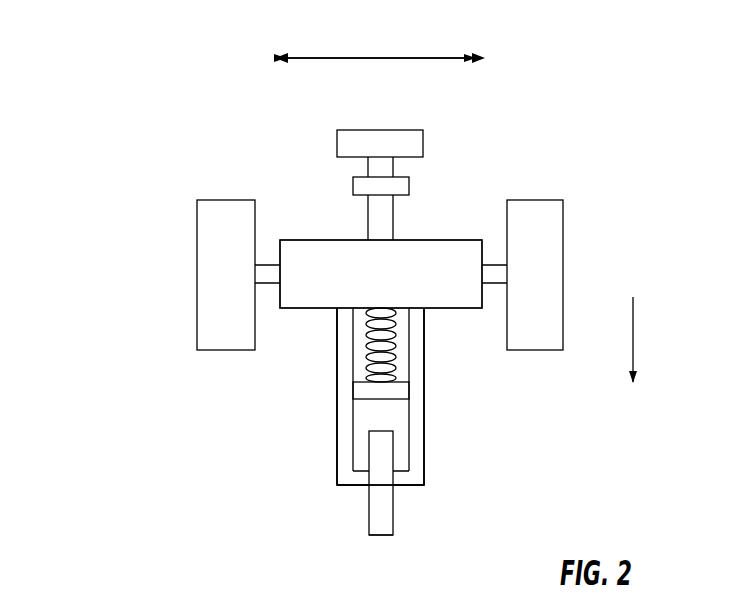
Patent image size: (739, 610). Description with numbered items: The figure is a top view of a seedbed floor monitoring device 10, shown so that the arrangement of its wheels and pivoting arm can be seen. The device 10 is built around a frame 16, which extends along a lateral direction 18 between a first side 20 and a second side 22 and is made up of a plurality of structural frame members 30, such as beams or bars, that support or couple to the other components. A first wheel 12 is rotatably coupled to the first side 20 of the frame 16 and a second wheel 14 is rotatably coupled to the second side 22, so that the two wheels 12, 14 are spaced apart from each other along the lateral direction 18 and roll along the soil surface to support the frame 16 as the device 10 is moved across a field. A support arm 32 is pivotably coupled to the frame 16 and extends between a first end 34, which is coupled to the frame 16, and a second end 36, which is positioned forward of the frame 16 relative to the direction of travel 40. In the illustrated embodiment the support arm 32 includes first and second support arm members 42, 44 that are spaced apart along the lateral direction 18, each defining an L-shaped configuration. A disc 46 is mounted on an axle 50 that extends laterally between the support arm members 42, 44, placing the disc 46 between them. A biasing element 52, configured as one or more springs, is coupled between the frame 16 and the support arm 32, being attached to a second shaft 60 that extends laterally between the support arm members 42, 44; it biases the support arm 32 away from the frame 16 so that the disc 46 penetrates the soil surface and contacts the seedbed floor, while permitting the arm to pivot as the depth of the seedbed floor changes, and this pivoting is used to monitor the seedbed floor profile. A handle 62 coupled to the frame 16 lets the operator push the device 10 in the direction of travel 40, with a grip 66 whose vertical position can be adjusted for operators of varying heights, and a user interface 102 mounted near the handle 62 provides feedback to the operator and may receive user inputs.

The seedbed floor monitoring device 10 is at (117, 113).
The first wheel 12 is at (563, 275).
The second wheel 14 is at (197, 253).
The frame 16 is at (299, 234).
The lateral direction 18 is at (377, 56).
The first side 20 is at (481, 335).
The second side 22 is at (276, 338).
The structural frame members 30 is at (463, 240).
The support arm 32 is at (319, 421).
The first end 34 is at (325, 340).
The second end 36 is at (414, 498).
The direction of travel 40 is at (633, 350).
The first support arm member 42 is at (424, 462).
The second support arm member 44 is at (335, 445).
The disc 46 is at (380, 537).
The axle 50 is at (352, 488).
The biasing element 52 is at (395, 340).
The second shaft 60 is at (393, 399).
The handle 62 is at (394, 217).
The grip 66 is at (378, 130).
The user interface 102 is at (353, 185).